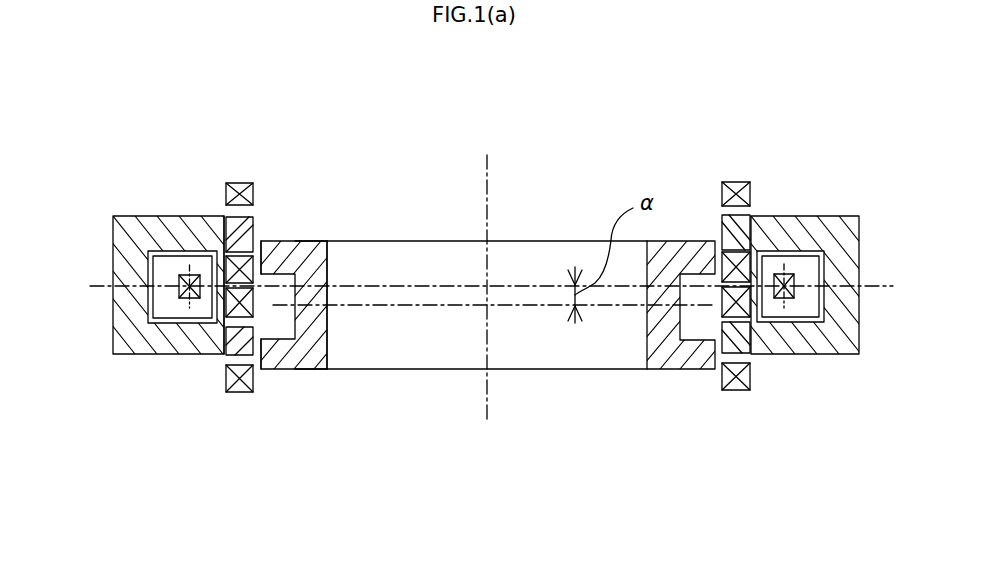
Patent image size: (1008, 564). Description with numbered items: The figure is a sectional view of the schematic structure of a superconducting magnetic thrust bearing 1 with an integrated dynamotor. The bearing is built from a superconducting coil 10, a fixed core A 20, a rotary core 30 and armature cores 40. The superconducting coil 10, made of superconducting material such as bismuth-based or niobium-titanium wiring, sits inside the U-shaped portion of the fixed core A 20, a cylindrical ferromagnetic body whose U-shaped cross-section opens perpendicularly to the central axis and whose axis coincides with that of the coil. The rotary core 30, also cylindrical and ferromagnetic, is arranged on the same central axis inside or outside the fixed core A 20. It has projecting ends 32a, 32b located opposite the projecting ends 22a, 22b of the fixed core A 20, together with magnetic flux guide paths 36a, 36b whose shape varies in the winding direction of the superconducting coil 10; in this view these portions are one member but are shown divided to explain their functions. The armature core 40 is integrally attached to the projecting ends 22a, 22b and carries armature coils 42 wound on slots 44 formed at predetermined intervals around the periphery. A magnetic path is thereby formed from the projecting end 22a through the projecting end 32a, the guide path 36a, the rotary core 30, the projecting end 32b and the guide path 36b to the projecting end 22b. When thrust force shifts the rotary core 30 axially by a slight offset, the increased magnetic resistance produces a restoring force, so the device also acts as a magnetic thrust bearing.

The superconducting magnetic thrust bearing with integrated dynamotor 1 is at (580, 157).
The superconducting coil 10 is at (165, 268).
The fixed core A 20 is at (112, 242).
The projecting end 22a is at (223, 248).
The projecting end 22b is at (226, 358).
The rotary core 30 is at (329, 337).
The projecting end 32a is at (282, 250).
The projecting end 32b is at (282, 360).
The magnetic flux guide path 36a is at (307, 257).
The magnetic flux guide path 36b is at (305, 360).
The armature core 40 is at (226, 234).
The armature coil 42 is at (239, 227).
The slot 44 is at (263, 243).